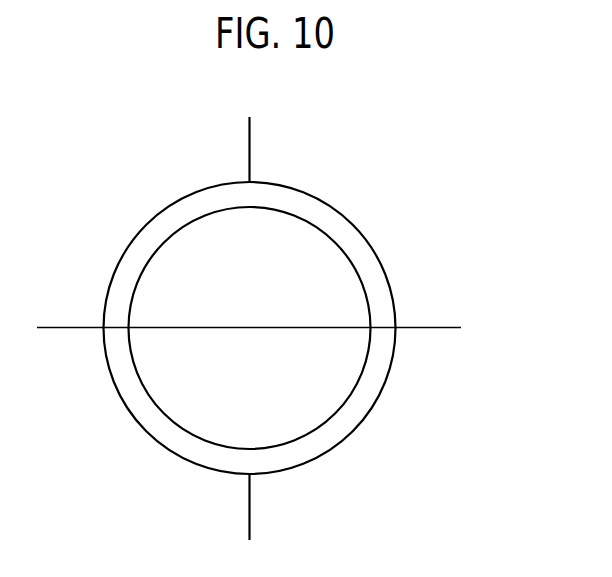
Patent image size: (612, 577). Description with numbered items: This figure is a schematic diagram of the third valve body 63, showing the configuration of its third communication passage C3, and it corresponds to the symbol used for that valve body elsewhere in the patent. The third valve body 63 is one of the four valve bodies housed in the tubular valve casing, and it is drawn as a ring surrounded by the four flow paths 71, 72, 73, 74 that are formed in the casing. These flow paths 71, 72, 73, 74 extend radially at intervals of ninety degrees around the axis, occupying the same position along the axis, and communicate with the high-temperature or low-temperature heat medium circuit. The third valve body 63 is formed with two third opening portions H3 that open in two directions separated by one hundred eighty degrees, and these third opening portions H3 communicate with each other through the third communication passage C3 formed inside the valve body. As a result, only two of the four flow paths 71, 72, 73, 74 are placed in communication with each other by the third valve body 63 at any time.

The third valve body 63 is at (278, 261).
The flow path 71 is at (250, 135).
The flow path 72 is at (244, 523).
The flow path 73 is at (442, 327).
The flow path 74 is at (47, 330).
The third opening portion H3 is at (128, 328).
The third communication passage C3 is at (284, 330).